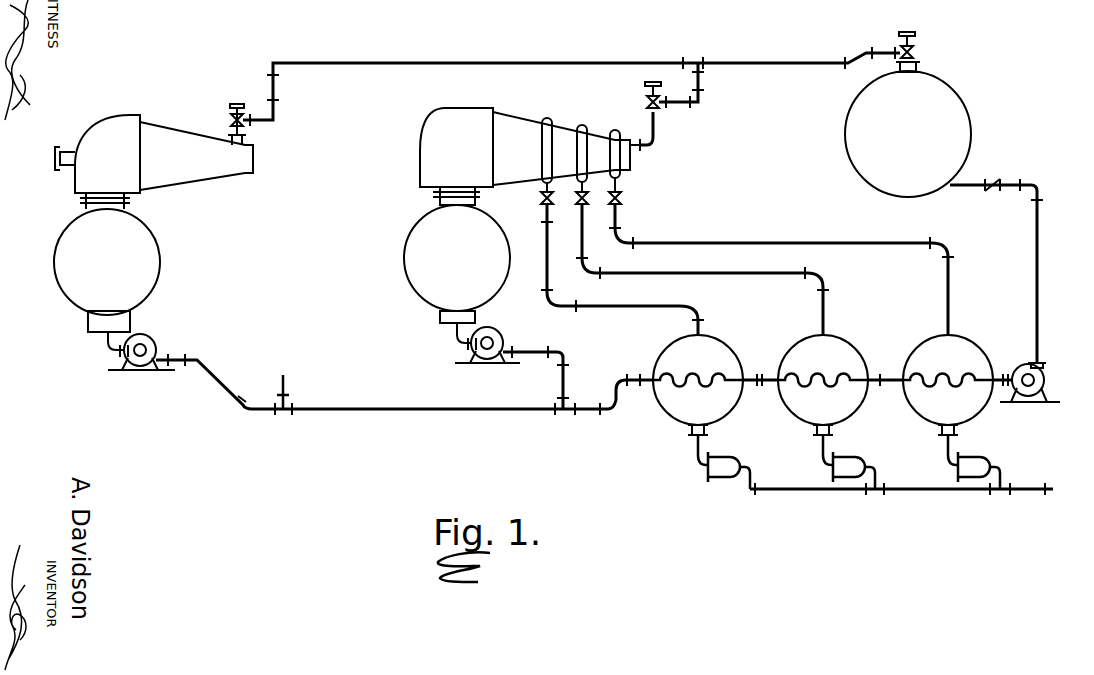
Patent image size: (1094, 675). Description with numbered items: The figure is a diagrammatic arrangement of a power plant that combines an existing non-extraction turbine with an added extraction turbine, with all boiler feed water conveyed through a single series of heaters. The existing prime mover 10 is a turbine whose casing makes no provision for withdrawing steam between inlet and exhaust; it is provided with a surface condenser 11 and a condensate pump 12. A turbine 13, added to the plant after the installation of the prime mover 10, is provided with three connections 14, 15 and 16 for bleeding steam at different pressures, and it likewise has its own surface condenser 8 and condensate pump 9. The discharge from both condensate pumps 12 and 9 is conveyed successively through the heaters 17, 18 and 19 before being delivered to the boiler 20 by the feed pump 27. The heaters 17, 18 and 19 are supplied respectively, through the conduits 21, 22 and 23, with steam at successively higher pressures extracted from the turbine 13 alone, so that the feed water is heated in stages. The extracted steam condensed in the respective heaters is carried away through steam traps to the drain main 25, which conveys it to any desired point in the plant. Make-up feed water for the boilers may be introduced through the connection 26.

The surface condenser 8 is at (412, 253).
The condensate pump 9 is at (457, 335).
The prime mover 10 is at (166, 136).
The surface condenser 11 is at (140, 236).
The condensate pump 12 is at (140, 340).
The turbine 13 is at (510, 160).
The connection 14 is at (622, 195).
The connection 15 is at (578, 188).
The connection 16 is at (543, 192).
The heater 17 is at (684, 417).
The heater 18 is at (817, 416).
The heater 19 is at (936, 414).
The boiler 20 is at (957, 135).
The conduit 21 is at (588, 303).
The conduit 22 is at (638, 273).
The conduit 23 is at (682, 243).
The drain main 25 is at (940, 490).
The connection 26 is at (285, 390).
The feed pump 27 is at (1022, 364).